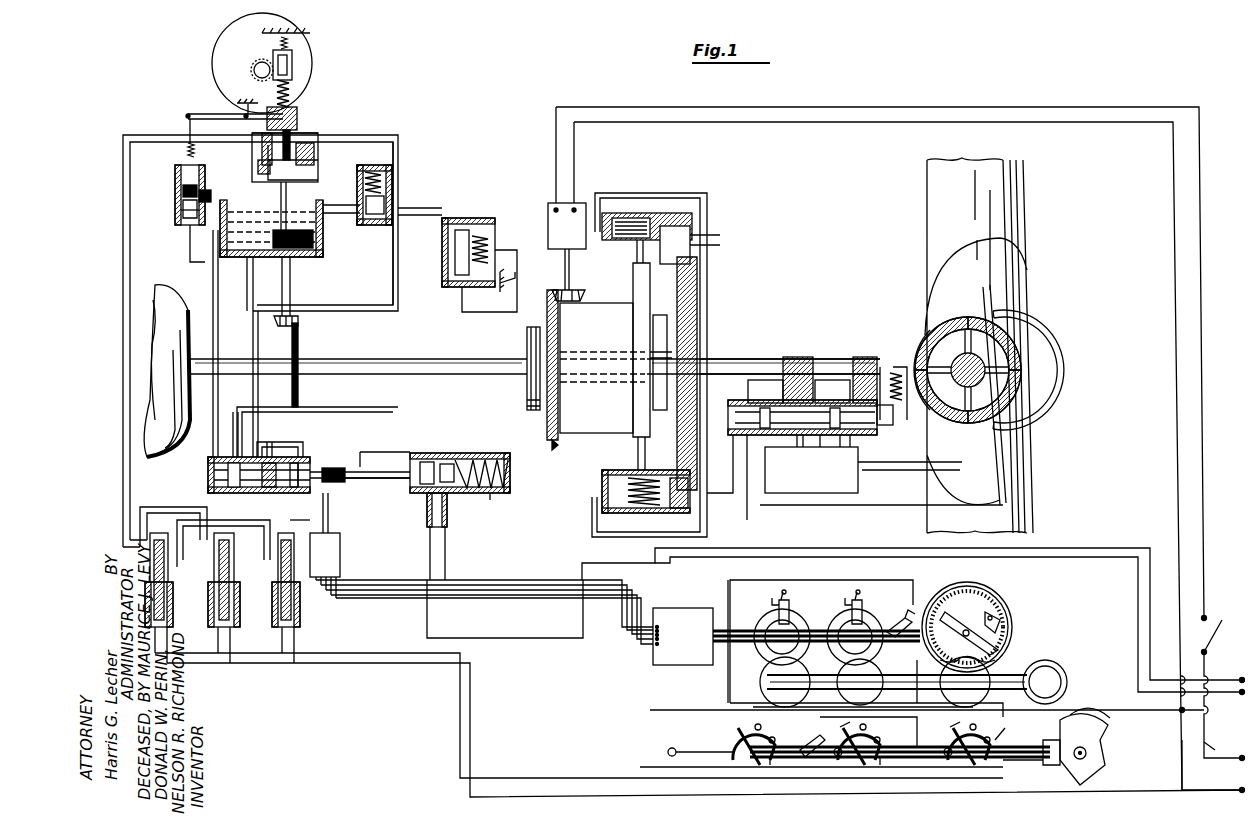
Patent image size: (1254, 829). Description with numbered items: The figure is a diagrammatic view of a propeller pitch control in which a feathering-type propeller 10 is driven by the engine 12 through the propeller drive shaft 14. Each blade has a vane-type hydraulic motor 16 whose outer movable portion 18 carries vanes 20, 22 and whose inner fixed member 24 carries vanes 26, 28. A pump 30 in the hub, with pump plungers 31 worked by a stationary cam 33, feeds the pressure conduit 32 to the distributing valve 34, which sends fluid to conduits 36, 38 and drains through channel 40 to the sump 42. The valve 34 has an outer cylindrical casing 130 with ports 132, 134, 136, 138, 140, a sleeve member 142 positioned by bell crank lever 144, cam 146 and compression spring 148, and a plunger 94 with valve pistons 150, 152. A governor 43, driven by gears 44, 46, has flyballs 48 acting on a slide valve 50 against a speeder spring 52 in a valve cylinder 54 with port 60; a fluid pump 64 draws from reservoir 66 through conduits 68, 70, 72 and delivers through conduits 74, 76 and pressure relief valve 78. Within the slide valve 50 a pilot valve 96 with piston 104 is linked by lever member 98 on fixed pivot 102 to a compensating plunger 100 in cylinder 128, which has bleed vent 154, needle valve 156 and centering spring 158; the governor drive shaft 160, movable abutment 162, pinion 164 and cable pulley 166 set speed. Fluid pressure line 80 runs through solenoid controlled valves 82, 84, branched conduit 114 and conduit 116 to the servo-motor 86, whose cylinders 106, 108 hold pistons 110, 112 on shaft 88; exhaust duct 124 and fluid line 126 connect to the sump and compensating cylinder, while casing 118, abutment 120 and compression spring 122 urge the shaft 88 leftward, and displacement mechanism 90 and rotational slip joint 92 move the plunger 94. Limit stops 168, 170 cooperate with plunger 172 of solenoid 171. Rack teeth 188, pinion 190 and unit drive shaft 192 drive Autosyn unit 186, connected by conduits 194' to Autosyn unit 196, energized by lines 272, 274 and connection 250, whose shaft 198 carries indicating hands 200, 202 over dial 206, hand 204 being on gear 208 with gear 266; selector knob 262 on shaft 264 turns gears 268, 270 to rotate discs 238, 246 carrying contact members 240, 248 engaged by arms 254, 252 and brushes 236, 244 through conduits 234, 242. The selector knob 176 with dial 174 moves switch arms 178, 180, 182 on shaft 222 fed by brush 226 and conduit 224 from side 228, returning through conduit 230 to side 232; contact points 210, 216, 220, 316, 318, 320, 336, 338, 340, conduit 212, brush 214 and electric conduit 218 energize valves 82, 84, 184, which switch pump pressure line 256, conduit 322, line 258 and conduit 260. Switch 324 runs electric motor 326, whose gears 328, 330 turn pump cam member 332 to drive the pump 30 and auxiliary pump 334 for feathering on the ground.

The propeller 10 is at (1037, 248).
The engine 12 is at (194, 317).
The propeller drive shaft 14 is at (460, 354).
The hydraulic motor 16 is at (1050, 345).
The outer relatively movable portion 18 is at (920, 350).
The vane 20 is at (964, 353).
The vane 22 is at (982, 380).
The inner relatively fixed member 24 is at (935, 358).
The vane 26 is at (960, 392).
The vane 28 is at (1002, 355).
The pump 30 is at (645, 207).
The pump plungers 31 is at (640, 265).
The pressure conduit 32 is at (707, 215).
The stationary cam 33 is at (645, 320).
The distributing valve 34 is at (752, 360).
The conduit 36 is at (872, 470).
The conduit 38 is at (893, 507).
The channel 40 is at (797, 495).
The sump 42 is at (690, 246).
The governor 43 is at (306, 122).
The gear 44 is at (300, 320).
The gear 46 is at (300, 350).
The flyballs 48 is at (300, 150).
The slide valve 50 is at (304, 160).
The speeder spring 52 is at (292, 95).
The valve cylinder 54 is at (291, 137).
The port 60 is at (260, 145).
The fluid pump 64 is at (312, 250).
The reservoir 66 is at (240, 228).
The conduit 68 is at (251, 284).
The conduit 70 is at (266, 308).
The conduit 72 is at (291, 290).
The conduit 74 is at (340, 222).
The conduit 76 is at (398, 148).
The pressure relief valve 78 is at (392, 170).
The fluid pressure line 80 is at (123, 275).
The solenoid controlled valve 82 is at (140, 530).
The solenoid controlled valve 84 is at (272, 573).
The servo-motor 86 is at (270, 455).
The shaft 88 is at (385, 480).
The displacement mechanism 90 is at (484, 452).
The rotational slip joint 92 is at (527, 392).
The plunger 94 is at (664, 472).
The pilot valve 96 is at (265, 127).
The lever member 98 is at (215, 112).
The compensating plunger 100 is at (175, 180).
The fixed pivot 102 is at (250, 80).
The piston 104 is at (262, 166).
The cylinder 106 is at (210, 472).
The cylinder 108 is at (312, 460).
The piston 110 is at (233, 457).
The piston 112 is at (280, 456).
The branched conduit 114 is at (195, 507).
The conduit 116 is at (304, 520).
The cylindrical casing 118 is at (492, 496).
The abutment 120 is at (472, 456).
The compression spring 122 is at (502, 455).
The exhaust duct 124 is at (250, 385).
The fluid line 126 is at (218, 325).
The cylinder 128 is at (178, 215).
The outer cylindrical casing 130 is at (820, 360).
The port 132 is at (733, 470).
The port 134 is at (747, 500).
The port 136 is at (806, 442).
The port 138 is at (828, 450).
The port 140 is at (858, 438).
The sleeve member 142 is at (866, 380).
The bell crank lever 144 is at (873, 365).
The cam 146 is at (926, 335).
The compression spring 148 is at (894, 401).
The valve piston 150 is at (780, 380).
The valve piston 152 is at (846, 380).
The bleed vent 154 is at (205, 225).
The needle valve 156 is at (222, 190).
The centering spring 158 is at (186, 156).
The governor drive shaft 160 is at (281, 193).
The movable abutment 162 is at (296, 60).
The pinion 164 is at (253, 70).
The cable pulley 166 is at (228, 37).
The limit stop 168 is at (428, 455).
The limit stop 170 is at (436, 455).
The solenoid 171 is at (448, 522).
The plunger 172 is at (448, 495).
The dial 174 is at (1052, 740).
The selector knob 176 is at (1102, 760).
The switch arm 178 is at (740, 767).
The switch arm 180 is at (848, 770).
The switch arm 182 is at (972, 770).
The solenoid valve 184 is at (210, 588).
The Autosyn unit 186 is at (340, 560).
The rack teeth 188 is at (336, 470).
The pinion 190 is at (338, 482).
The unit drive shaft 192 is at (338, 520).
The wires 194' is at (484, 599).
The Autosyn unit 196 is at (687, 672).
The shaft 198 is at (815, 628).
The indicating hand 200 is at (955, 598).
The indicating hand 202 is at (980, 608).
The indicating hand 204 is at (1010, 635).
The dial 206 is at (1000, 615).
The gear 208 is at (995, 668).
The contact point 210 is at (753, 710).
The conduit 212 is at (905, 690).
The brush 214 is at (897, 630).
The contact point 216 is at (862, 727).
The electric conduit 218 is at (945, 746).
The contact 220 is at (972, 727).
The shaft 222 is at (1035, 762).
The conduit 224 is at (1132, 710).
The brush 226 is at (815, 735).
The side 228 is at (1223, 740).
The conduit 230 is at (1165, 791).
The side 232 is at (1184, 720).
The conduit 234 is at (318, 665).
The brush 236 is at (858, 595).
The disc 238 is at (842, 645).
The contact member 240 is at (840, 605).
The electrical conduit 242 is at (518, 637).
The brush 244 is at (778, 600).
The disc 246 is at (745, 625).
The contact member 248 is at (778, 640).
The wire 250 is at (808, 598).
The arm 252 is at (762, 637).
The arm 254 is at (865, 618).
The pump pressure line 256 is at (400, 276).
The line 258 is at (212, 566).
The conduit 260 is at (235, 520).
The selector knob 262 is at (1064, 678).
The shaft 264 is at (895, 678).
The gear 266 is at (975, 690).
The gear 268 is at (860, 683).
The gear 270 is at (760, 675).
The line 272 is at (1120, 548).
The line 274 is at (1138, 577).
The contact point 316 is at (998, 730).
The contact point 318 is at (876, 758).
The dead point 320 is at (775, 758).
The conduit 322 is at (145, 506).
The switch 324 is at (1223, 688).
The electric motor 326 is at (545, 215).
The gear 328 is at (578, 294).
The gear 330 is at (550, 432).
The pump cam member 332 is at (608, 442).
The auxiliary pump 334 is at (478, 228).
The contact point 336 is at (948, 758).
The contact point 338 is at (838, 758).
The contact point 340 is at (701, 754).